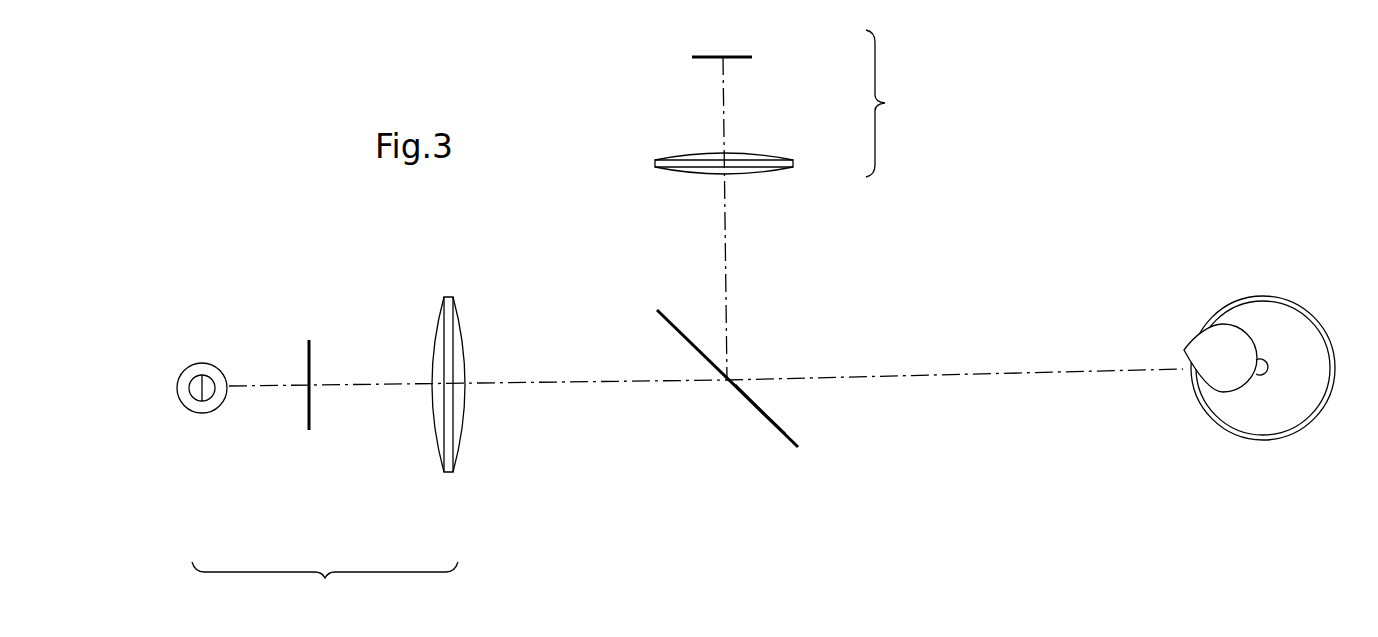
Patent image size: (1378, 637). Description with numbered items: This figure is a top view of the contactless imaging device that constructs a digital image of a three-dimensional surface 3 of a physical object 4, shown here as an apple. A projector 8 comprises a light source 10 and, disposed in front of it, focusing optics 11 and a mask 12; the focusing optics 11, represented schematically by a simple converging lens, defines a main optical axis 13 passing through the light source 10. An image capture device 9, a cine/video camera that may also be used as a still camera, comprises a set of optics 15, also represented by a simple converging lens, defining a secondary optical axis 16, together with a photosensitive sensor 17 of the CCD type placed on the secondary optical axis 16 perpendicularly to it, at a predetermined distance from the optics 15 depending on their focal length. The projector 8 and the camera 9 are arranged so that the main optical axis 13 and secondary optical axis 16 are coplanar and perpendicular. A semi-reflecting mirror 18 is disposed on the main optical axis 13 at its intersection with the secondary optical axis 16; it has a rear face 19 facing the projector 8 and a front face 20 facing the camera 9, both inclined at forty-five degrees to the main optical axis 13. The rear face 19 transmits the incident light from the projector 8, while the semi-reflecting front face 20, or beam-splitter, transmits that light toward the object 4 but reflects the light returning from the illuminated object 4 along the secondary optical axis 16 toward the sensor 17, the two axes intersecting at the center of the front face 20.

The three-dimensional surface 3 is at (1188, 373).
The physical object 4 is at (1311, 303).
The projector 8 is at (325, 583).
The image capture device 9 is at (885, 103).
The light source 10 is at (216, 424).
The focusing optics 11 is at (437, 464).
The mask 12 is at (317, 437).
The main optical axis 13 is at (576, 380).
The set of optics 15 is at (795, 147).
The secondary optical axis 16 is at (727, 248).
The photosensitive sensor 17 is at (747, 56).
The semi-reflecting mirror 18 is at (781, 444).
The rear face 19 is at (748, 400).
The front face 20 is at (772, 417).